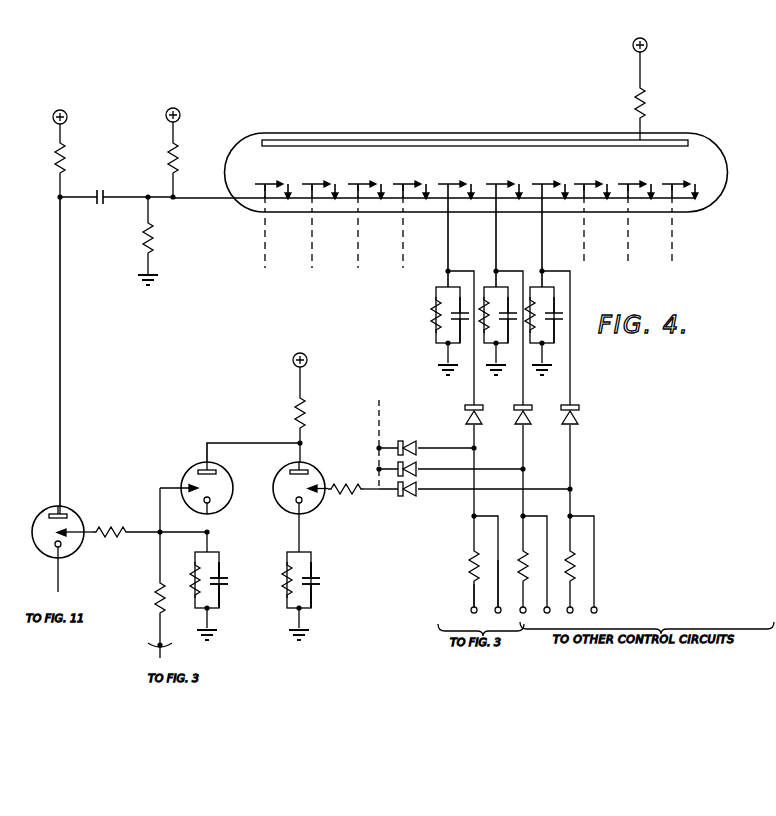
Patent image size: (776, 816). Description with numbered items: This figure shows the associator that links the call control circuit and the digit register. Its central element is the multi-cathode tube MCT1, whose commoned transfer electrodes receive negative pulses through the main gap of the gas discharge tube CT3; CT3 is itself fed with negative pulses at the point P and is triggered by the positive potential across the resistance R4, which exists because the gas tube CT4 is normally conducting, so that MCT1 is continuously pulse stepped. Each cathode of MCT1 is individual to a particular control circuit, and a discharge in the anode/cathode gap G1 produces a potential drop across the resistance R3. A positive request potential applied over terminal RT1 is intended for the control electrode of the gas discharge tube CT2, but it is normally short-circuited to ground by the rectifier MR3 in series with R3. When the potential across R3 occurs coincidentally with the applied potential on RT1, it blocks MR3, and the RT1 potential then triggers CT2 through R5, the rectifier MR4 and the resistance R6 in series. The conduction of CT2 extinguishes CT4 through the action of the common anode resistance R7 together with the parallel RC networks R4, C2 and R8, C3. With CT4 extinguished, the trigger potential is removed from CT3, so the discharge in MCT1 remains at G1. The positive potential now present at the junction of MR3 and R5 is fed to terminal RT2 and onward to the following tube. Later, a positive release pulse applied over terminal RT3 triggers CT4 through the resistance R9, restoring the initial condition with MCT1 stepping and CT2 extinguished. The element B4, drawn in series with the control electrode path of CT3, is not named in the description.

The multi-cathode tube MCT1 is at (450, 153).
The anode/cathode gap G1 is at (475, 157).
The resistance R3 is at (435, 301).
The rectifier MR3 is at (497, 458).
The rectifier MR4 is at (474, 448).
The resistance R5 is at (516, 563).
The terminal RT1 is at (458, 606).
The terminal RT2 is at (492, 596).
The common anode resistance R7 is at (314, 407).
The gas discharge tube CT3 is at (68, 531).
The point P is at (56, 583).
The resistor B4 is at (150, 540).
The gas tube CT4 is at (209, 497).
The gas discharge tube CT2 is at (313, 490).
The resistance R6 is at (353, 478).
The resistance R9 is at (146, 588).
The terminal RT3 is at (177, 656).
The resistance R4 is at (199, 586).
The capacitor C2 is at (228, 585).
The resistance R8 is at (286, 577).
The capacitor C3 is at (320, 585).